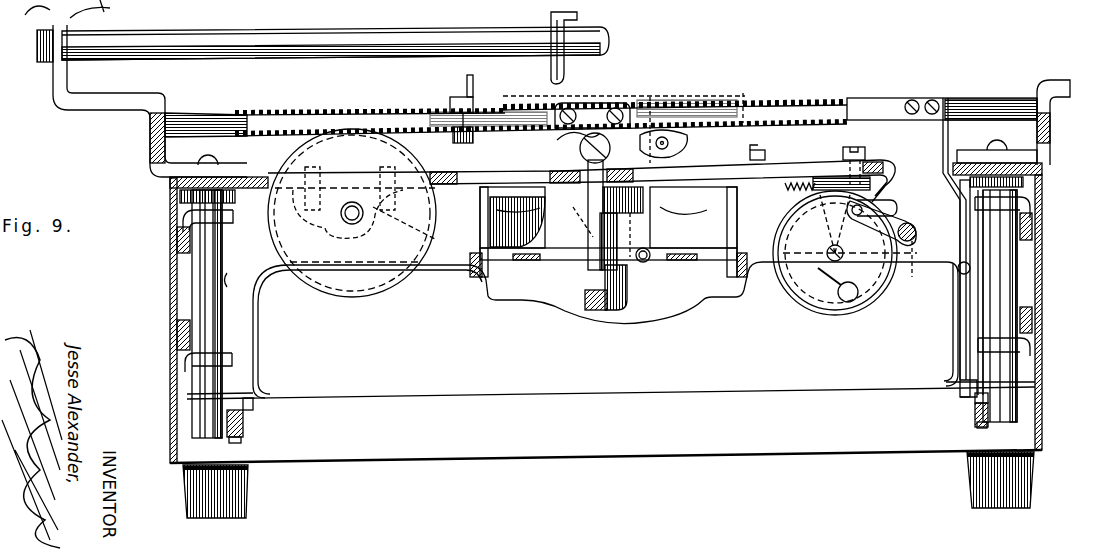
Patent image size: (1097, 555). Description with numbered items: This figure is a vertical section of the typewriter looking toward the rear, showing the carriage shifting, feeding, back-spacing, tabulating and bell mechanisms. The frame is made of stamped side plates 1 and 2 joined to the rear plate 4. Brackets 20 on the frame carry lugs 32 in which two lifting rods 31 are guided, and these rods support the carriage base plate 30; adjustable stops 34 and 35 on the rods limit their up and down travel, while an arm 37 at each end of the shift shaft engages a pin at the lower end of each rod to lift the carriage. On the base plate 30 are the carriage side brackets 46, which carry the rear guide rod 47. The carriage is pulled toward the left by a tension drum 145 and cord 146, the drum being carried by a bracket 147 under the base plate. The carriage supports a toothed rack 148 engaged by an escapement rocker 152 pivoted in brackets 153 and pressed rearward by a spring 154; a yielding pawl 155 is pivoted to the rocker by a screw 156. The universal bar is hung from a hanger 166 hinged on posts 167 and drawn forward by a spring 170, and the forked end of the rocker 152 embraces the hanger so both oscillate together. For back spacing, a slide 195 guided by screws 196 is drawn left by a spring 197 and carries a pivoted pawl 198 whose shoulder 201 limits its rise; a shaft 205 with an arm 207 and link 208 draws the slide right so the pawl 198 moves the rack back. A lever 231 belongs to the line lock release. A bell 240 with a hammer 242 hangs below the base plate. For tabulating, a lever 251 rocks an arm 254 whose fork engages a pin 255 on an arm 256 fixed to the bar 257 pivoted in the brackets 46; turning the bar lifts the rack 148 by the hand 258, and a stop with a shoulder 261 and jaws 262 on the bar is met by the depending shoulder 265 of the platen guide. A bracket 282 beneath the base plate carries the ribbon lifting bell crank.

The side plate 1 is at (177, 334).
The side plate 2 is at (1042, 296).
The rear plate 4 is at (605, 448).
The bracket 20 is at (183, 294).
The base plate 30 is at (175, 181).
The lifting rod 31 is at (205, 337).
The lug 32 is at (230, 222).
The adjustable stop 34 is at (230, 282).
The adjustable stop 35 is at (228, 324).
The arm 37 is at (243, 437).
The side bracket 46 is at (152, 143).
The rear guide rod 47 is at (372, 52).
The tension drum 145 is at (368, 278).
The cord 146 is at (392, 128).
The bracket 147 is at (438, 238).
The toothed rack 148 is at (644, 100).
The escapement rocker 152 is at (597, 258).
The bracket 153 is at (488, 200).
The spring 154 is at (633, 213).
The pawl 155 is at (602, 128).
The screw 156 is at (594, 131).
The hanger 166 is at (700, 228).
The post 167 is at (433, 185).
The spring 170 is at (645, 262).
The slide 195 is at (737, 158).
The screw 196 is at (843, 150).
The spring 197 is at (795, 190).
The pawl 198 is at (723, 120).
The shoulder 201 is at (668, 154).
The shaft 205 is at (894, 247).
The arm 207 is at (914, 229).
The link 208 is at (897, 202).
The lever 231 is at (250, 411).
The bell 240 is at (810, 300).
The hammer 242 is at (862, 304).
The lever 251 is at (970, 403).
The arm 254 is at (962, 338).
The pin 255 is at (972, 222).
The arm 256 is at (945, 137).
The bar 257 is at (295, 120).
The hand 258 is at (558, 142).
The stop shoulder 261 is at (474, 84).
The jaws 262 is at (455, 97).
The depending shoulder 265 is at (552, 46).
The bracket 282 is at (618, 313).